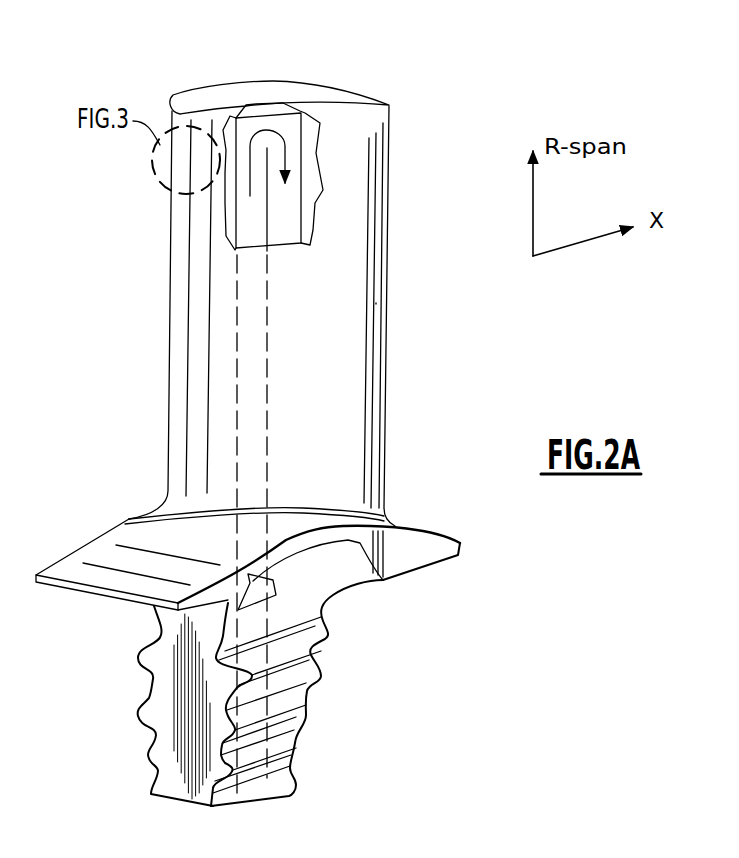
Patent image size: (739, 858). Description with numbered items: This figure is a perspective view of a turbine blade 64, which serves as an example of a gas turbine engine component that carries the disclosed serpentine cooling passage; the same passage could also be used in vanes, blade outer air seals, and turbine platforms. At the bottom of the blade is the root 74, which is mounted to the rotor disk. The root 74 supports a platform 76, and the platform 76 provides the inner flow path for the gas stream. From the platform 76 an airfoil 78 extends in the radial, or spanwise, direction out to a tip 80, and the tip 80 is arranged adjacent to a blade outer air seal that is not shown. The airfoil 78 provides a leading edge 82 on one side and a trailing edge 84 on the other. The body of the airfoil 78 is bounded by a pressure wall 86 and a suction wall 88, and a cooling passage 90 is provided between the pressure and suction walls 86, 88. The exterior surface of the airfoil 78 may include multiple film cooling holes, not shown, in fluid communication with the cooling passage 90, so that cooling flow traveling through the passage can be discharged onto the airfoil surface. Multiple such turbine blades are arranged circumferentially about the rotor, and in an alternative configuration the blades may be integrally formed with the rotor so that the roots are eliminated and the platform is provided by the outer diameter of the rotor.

The turbine blade 64 is at (128, 252).
The root 74 is at (177, 703).
The platform 76 is at (283, 522).
The airfoil 78 is at (334, 400).
The tip 80 is at (193, 87).
The leading edge 82 is at (168, 262).
The trailing edge 84 is at (388, 248).
The pressure wall 86 is at (303, 309).
The suction wall 88 is at (310, 73).
The cooling passage 90 is at (314, 188).